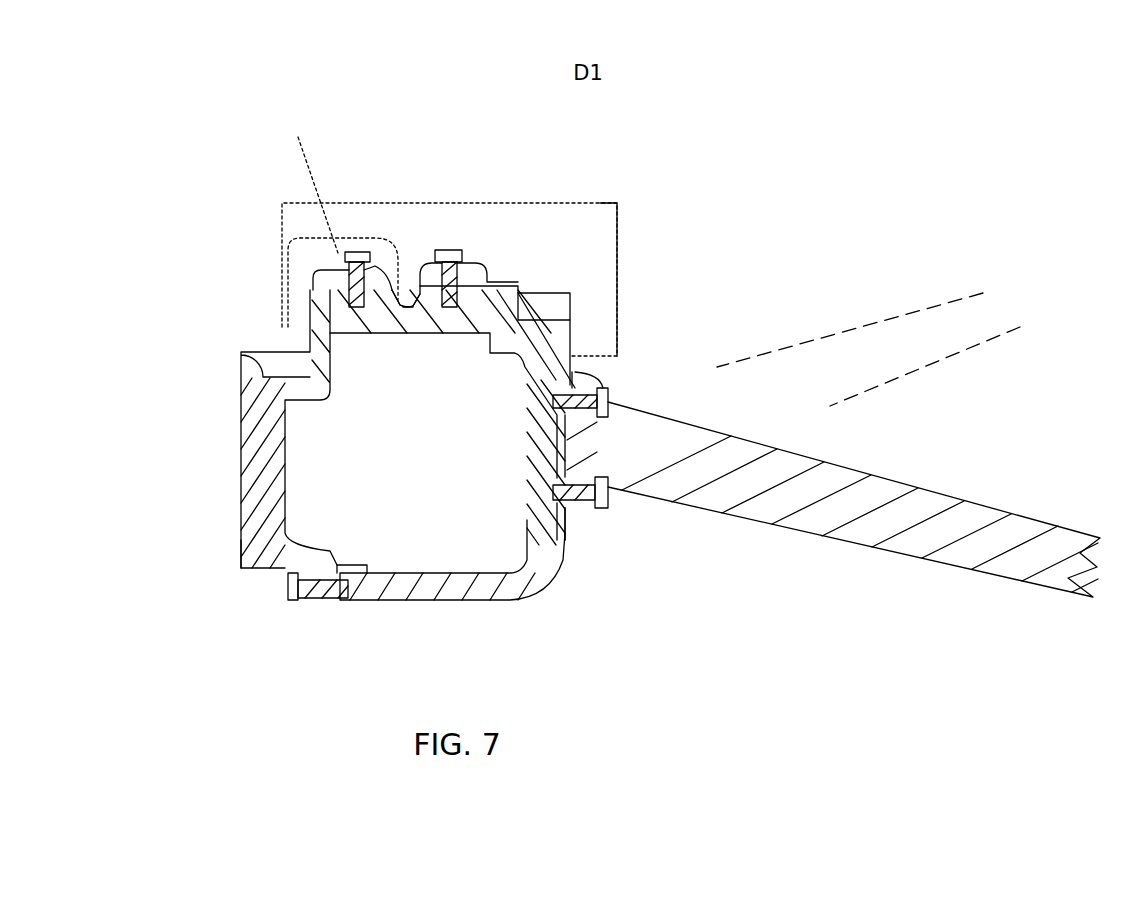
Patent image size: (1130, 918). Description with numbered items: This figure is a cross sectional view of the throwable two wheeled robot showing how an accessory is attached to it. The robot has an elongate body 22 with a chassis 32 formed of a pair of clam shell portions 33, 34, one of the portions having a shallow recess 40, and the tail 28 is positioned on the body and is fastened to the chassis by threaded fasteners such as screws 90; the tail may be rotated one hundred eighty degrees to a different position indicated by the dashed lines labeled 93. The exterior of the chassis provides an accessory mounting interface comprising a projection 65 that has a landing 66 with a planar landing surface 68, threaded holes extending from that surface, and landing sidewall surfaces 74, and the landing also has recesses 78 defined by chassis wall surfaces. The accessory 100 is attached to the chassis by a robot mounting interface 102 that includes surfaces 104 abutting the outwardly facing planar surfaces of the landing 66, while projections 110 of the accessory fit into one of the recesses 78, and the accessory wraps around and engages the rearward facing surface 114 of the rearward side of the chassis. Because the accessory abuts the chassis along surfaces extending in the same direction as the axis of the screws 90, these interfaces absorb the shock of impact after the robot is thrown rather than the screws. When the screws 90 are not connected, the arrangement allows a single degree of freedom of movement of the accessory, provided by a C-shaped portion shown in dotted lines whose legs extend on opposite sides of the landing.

The elongate body 22 is at (240, 478).
The tail 28 is at (833, 499).
The chassis 32 is at (237, 537).
The clam shell portion 33 is at (258, 563).
The clam shell portion 34 is at (565, 541).
The shallow recess 40 is at (495, 545).
The projection 65 is at (505, 268).
The landing 66 is at (377, 335).
The planar landing surface 68 is at (313, 275).
The landing sidewall surface 74 is at (552, 292).
The recess 78 is at (415, 330).
The screw 90 is at (345, 255).
The dashed lines 93 is at (904, 308).
The accessory 100 is at (340, 203).
The robot mounting interface 102 is at (520, 282).
The surfaces 104 is at (283, 322).
The projection 110 is at (405, 305).
The rearward facing surface 114 is at (570, 541).